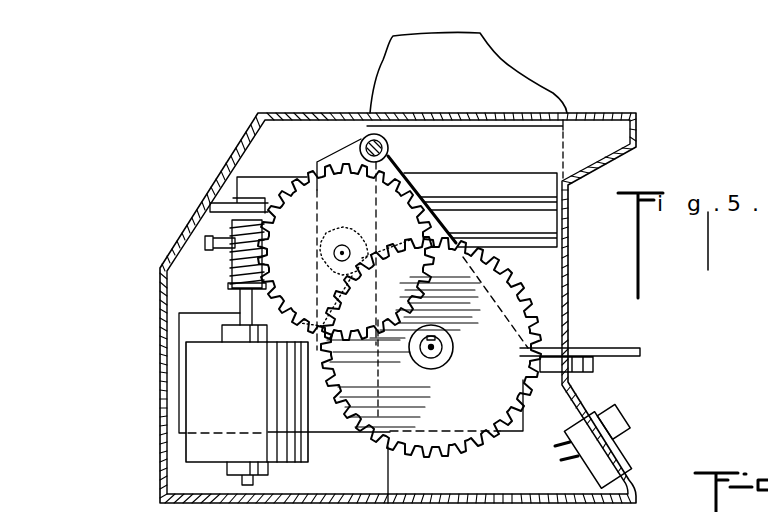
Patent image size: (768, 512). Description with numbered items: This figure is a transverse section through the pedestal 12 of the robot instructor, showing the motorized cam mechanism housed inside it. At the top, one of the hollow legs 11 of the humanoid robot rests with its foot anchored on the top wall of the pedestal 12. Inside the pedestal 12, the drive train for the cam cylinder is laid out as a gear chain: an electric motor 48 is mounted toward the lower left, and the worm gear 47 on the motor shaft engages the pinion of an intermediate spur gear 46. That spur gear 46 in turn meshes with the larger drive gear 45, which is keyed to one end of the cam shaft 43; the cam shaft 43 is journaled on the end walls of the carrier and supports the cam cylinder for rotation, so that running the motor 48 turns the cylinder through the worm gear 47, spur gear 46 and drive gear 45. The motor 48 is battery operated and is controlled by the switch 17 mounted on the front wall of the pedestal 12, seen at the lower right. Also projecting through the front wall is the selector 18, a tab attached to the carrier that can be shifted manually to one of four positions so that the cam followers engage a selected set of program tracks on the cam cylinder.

The hollow legs 11 is at (542, 92).
The pedestal 12 is at (572, 298).
The switch 17 is at (597, 458).
The selector 18 is at (641, 352).
The cam shaft 43 is at (437, 351).
The drive gear 45 is at (455, 452).
The intermediate spur gear 46 is at (307, 178).
The worm gear 47 is at (232, 272).
The electric motor 48 is at (200, 401).